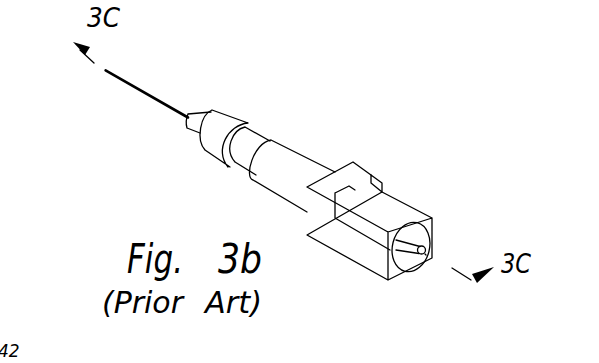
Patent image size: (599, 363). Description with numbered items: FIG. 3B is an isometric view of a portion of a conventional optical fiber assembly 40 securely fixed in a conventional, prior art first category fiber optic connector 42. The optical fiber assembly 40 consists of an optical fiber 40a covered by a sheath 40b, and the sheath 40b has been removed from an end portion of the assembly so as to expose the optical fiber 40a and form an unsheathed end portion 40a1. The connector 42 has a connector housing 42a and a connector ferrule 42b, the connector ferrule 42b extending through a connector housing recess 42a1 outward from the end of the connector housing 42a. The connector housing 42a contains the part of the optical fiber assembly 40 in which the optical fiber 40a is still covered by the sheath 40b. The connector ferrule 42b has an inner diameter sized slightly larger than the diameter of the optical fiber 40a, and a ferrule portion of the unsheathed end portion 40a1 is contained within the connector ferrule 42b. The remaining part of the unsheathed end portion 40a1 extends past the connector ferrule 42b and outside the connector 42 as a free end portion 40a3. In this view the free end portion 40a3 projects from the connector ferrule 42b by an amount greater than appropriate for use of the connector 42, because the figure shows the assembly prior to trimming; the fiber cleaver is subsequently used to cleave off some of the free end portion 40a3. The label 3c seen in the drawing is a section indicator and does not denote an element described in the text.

The optical fiber assembly 40 is at (140, 90).
The sheath 40b is at (189, 110).
The connector body 3c is at (259, 137).
The first category fiber optic connector 42 is at (318, 127).
The connector housing 42a is at (371, 174).
The connector housing recess 42a1 is at (388, 280).
The connector ferrule 42b is at (412, 247).
The optical fiber 40a is at (434, 248).
The unsheathed end portion 40a1 is at (430, 252).
The free end portion 40a3 is at (429, 256).